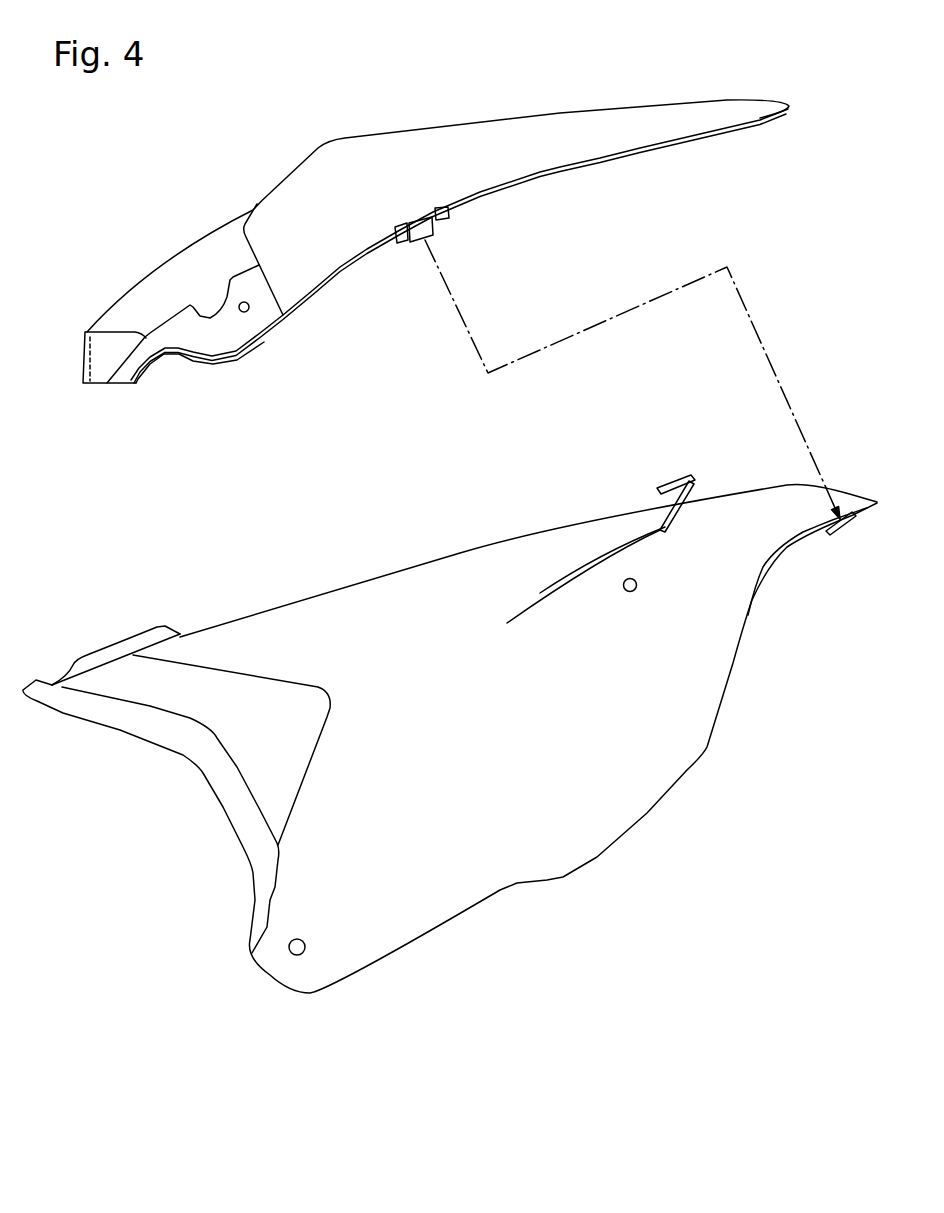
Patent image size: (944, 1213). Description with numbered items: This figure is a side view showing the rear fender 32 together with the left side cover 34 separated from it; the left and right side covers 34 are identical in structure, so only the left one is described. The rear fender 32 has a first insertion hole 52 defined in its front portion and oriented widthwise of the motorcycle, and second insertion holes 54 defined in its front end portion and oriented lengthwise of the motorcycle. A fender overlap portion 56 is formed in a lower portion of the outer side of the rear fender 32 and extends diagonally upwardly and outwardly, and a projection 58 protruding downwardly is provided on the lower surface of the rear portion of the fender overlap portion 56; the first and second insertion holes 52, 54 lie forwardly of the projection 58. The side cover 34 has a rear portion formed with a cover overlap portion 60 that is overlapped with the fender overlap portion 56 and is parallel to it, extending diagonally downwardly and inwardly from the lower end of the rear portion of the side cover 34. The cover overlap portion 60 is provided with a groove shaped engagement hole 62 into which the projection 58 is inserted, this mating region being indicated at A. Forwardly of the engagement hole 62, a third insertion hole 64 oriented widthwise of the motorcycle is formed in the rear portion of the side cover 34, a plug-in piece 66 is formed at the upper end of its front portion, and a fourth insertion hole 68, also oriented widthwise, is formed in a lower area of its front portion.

The rear fender 32 is at (568, 109).
The side cover 34 is at (466, 548).
The first insertion hole 52 is at (250, 306).
The second insertion hole 54 is at (77, 362).
The fender overlap portion 56 is at (378, 242).
The projection 58 is at (430, 228).
The cover overlap portion 60 is at (780, 558).
The engagement hole 62 is at (831, 536).
The third insertion hole 64 is at (623, 583).
The plug-in piece 66 is at (117, 650).
The fourth insertion hole 68 is at (302, 953).
The engagement region A is at (753, 328).